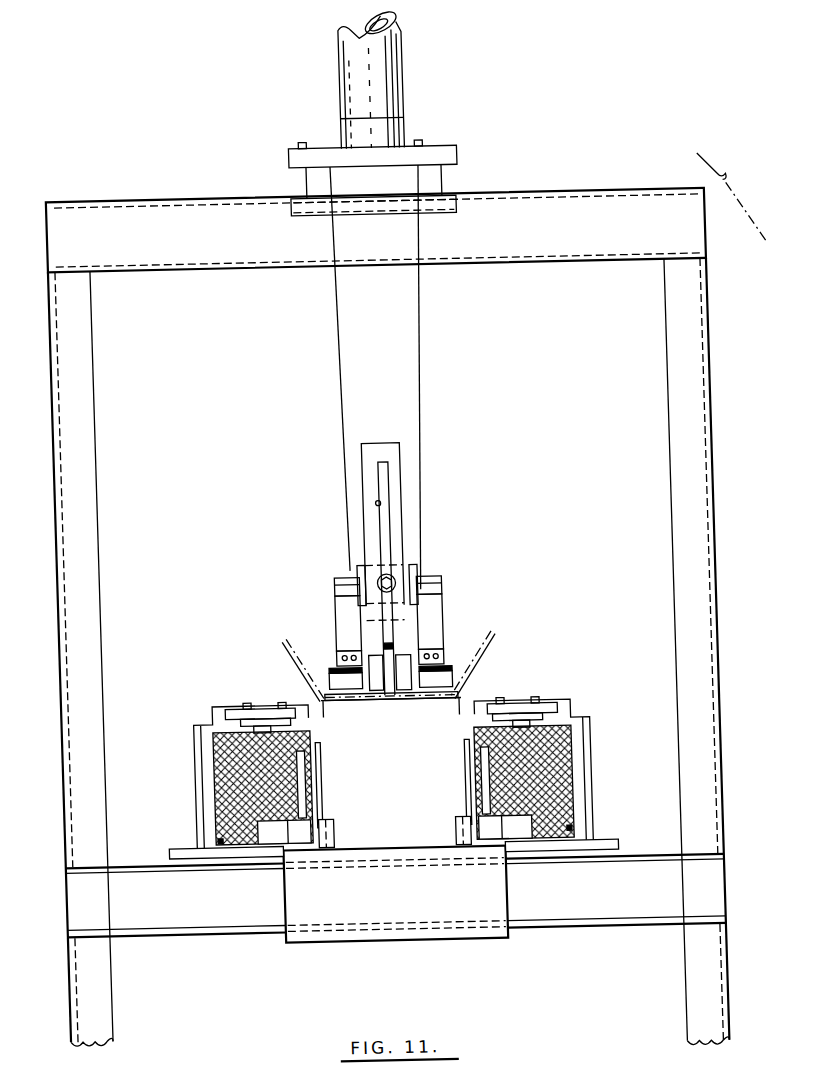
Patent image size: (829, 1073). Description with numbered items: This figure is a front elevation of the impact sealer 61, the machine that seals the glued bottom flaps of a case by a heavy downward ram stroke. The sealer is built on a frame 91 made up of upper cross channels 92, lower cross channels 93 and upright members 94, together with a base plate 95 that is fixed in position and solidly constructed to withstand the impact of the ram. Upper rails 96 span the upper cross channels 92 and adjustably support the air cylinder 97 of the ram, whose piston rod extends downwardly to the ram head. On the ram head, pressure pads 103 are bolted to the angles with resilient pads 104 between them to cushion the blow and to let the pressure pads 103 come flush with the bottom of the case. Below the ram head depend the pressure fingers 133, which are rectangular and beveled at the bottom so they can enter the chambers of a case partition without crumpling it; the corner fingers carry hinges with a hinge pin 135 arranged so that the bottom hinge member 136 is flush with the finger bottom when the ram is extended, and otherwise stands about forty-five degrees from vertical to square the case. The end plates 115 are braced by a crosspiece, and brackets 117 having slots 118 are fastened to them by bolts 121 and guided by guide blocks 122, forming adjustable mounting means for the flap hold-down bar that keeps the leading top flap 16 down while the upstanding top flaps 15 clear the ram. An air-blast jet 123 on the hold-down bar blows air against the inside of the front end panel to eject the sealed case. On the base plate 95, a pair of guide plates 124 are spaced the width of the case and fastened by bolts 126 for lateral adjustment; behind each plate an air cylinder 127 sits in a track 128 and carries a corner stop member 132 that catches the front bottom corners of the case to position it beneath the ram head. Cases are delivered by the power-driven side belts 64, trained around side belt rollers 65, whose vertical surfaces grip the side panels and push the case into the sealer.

The top flaps 15 is at (281, 640).
The leading top flap 16 is at (360, 700).
The impact sealer 61 is at (732, 194).
The side belts 64 is at (225, 755).
The side belt rollers 65 is at (222, 716).
The frame 91 is at (386, 600).
The upper cross channels 92 is at (224, 195).
The lower cross channels 93 is at (208, 918).
The upright members 94 is at (89, 982).
The base plate 95 is at (394, 848).
The upper rails 96 is at (454, 183).
The air cylinder 97 is at (400, 96).
The pressure pads 103 is at (333, 585).
The resilient pads 104 is at (442, 585).
The end plates 115 is at (447, 320).
The brackets 117 is at (406, 497).
The slots 118 is at (378, 501).
The bolts 121 is at (394, 582).
The guide blocks 122 is at (360, 568).
The air-blast jet 123 is at (413, 699).
The guide plates 124 is at (300, 775).
The bolts 126 is at (206, 832).
The air cylinder 127 is at (284, 818).
The track 128 is at (316, 771).
The corner stop members 132 is at (345, 832).
The pressure fingers 133 is at (338, 616).
The hinge pin 135 is at (332, 668).
The bottom hinge member 136 is at (327, 682).